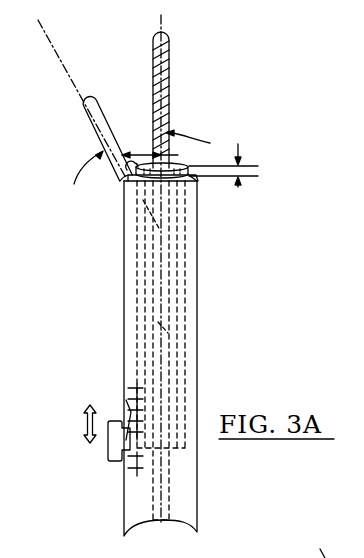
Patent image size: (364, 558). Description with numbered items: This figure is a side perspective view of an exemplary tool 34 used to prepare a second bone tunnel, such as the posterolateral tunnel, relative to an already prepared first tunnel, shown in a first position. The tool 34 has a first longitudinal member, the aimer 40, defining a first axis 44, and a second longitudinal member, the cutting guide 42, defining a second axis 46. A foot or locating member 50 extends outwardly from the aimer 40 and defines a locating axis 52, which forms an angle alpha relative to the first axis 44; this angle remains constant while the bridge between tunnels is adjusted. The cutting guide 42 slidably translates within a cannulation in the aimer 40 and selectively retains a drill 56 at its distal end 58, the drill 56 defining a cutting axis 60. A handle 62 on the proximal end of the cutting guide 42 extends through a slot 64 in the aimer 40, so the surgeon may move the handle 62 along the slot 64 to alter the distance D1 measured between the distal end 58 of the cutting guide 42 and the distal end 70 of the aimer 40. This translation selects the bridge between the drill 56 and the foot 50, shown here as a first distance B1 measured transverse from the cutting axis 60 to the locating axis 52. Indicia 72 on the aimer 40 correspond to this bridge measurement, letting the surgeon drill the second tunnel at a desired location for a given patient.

The tool 34 is at (266, 257).
The aimer 40 is at (196, 289).
The cutting guide 42 is at (190, 171).
The first axis 44 is at (160, 263).
The second axis 46 is at (170, 332).
The locating member 50 is at (85, 110).
The locating axis 52 is at (66, 62).
The drill 56 is at (167, 88).
The distal end 58 is at (127, 182).
The cutting axis 60 is at (168, 27).
The handle 62 is at (107, 447).
The slot 64 is at (131, 412).
The distal end 70 is at (194, 179).
The indicia 72 is at (130, 470).
The first distance B1 is at (163, 156).
The distance D1 is at (223, 154).